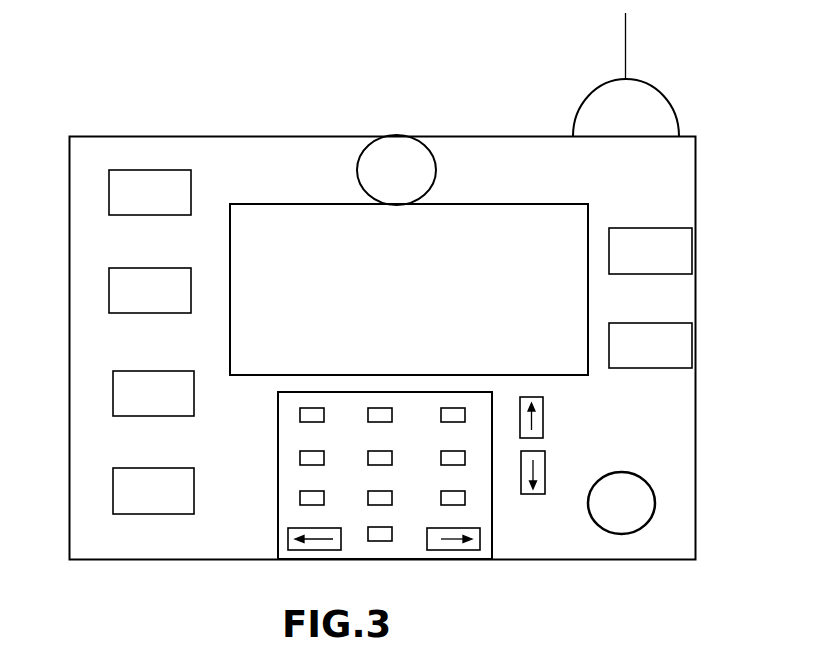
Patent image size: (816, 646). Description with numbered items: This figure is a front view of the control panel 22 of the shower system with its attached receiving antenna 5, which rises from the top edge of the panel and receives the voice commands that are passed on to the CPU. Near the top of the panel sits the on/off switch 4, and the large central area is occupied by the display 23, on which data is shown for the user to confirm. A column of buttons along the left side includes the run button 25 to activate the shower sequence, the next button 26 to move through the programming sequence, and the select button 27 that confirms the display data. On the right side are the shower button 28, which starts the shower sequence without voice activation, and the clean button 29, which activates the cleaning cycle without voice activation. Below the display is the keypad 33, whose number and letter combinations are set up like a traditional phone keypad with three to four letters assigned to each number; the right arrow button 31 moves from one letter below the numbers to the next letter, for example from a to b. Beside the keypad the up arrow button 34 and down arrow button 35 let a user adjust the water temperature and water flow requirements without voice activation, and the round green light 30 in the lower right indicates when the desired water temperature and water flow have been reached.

The on/off switch 4 is at (393, 149).
The receiving antenna 5 is at (647, 106).
The control panel 22 is at (672, 165).
The display 23 is at (493, 228).
The run button 25 is at (109, 298).
The next button 26 is at (113, 395).
The select button 27 is at (109, 199).
The shower button 28 is at (684, 253).
The clean button 29 is at (683, 353).
The green light 30 is at (622, 543).
The right arrow button 31 is at (333, 543).
The keypad 33 is at (407, 550).
The up arrow button 34 is at (543, 417).
The down arrow button 35 is at (545, 459).